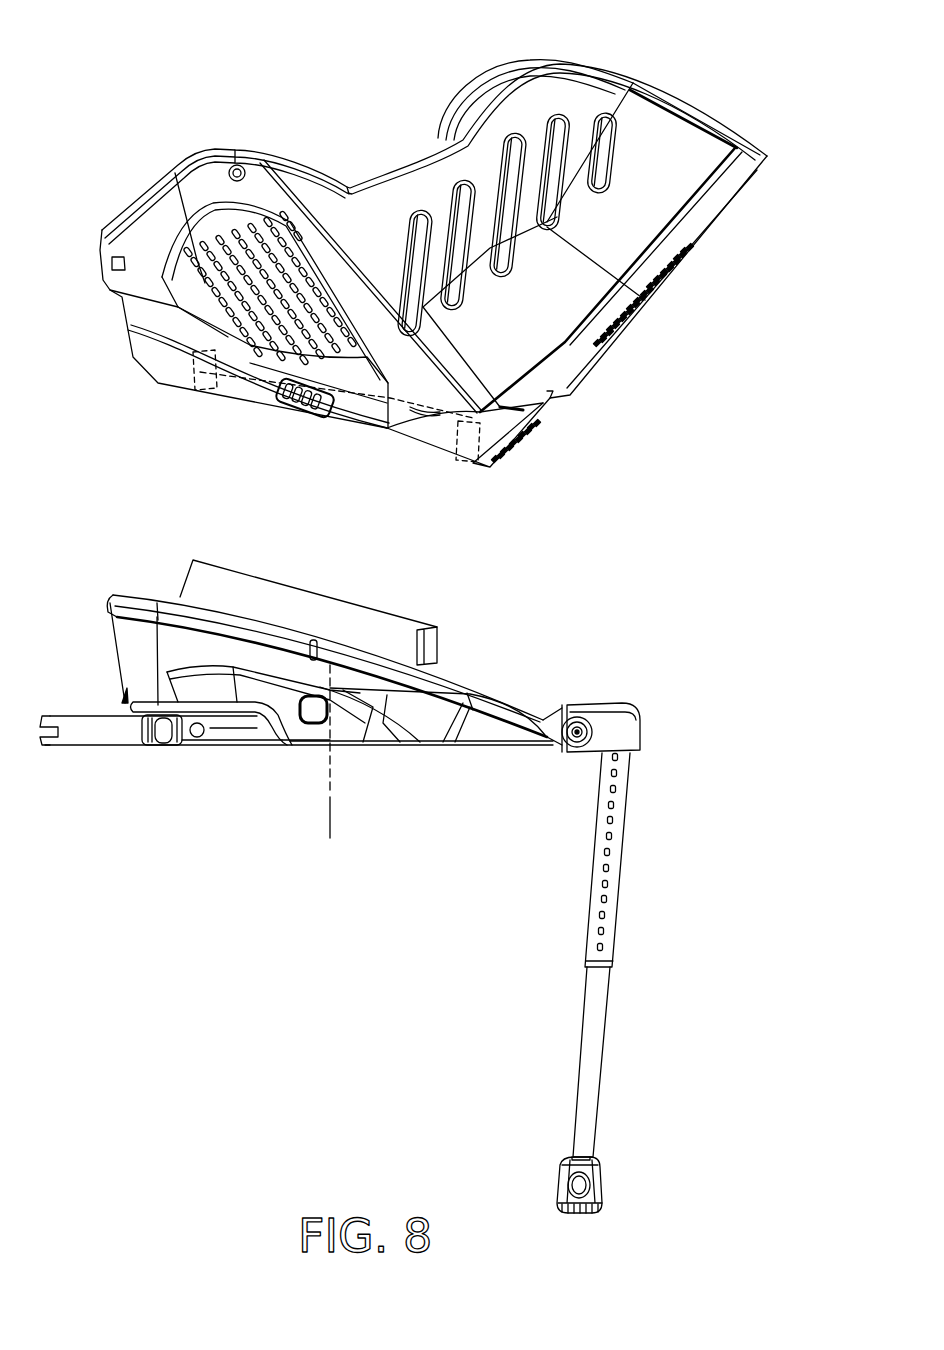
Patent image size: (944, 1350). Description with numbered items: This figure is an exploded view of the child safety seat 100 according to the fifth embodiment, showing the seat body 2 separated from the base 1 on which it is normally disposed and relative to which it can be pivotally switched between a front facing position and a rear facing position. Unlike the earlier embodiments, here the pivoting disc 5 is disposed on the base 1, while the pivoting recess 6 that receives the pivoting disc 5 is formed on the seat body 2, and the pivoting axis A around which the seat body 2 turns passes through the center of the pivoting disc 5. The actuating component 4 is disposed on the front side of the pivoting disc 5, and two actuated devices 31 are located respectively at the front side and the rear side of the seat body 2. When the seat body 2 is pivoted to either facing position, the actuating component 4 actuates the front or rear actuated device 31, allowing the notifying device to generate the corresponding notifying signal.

The child safety seat 100 is at (112, 48).
The seat body 2 is at (533, 340).
The actuated device 31 is at (190, 360).
The pivoting recess 6 is at (208, 372).
The base 1 is at (152, 680).
The pivoting disc 5 is at (193, 578).
The actuating component 4 is at (437, 650).
The pivoting axis A is at (330, 797).